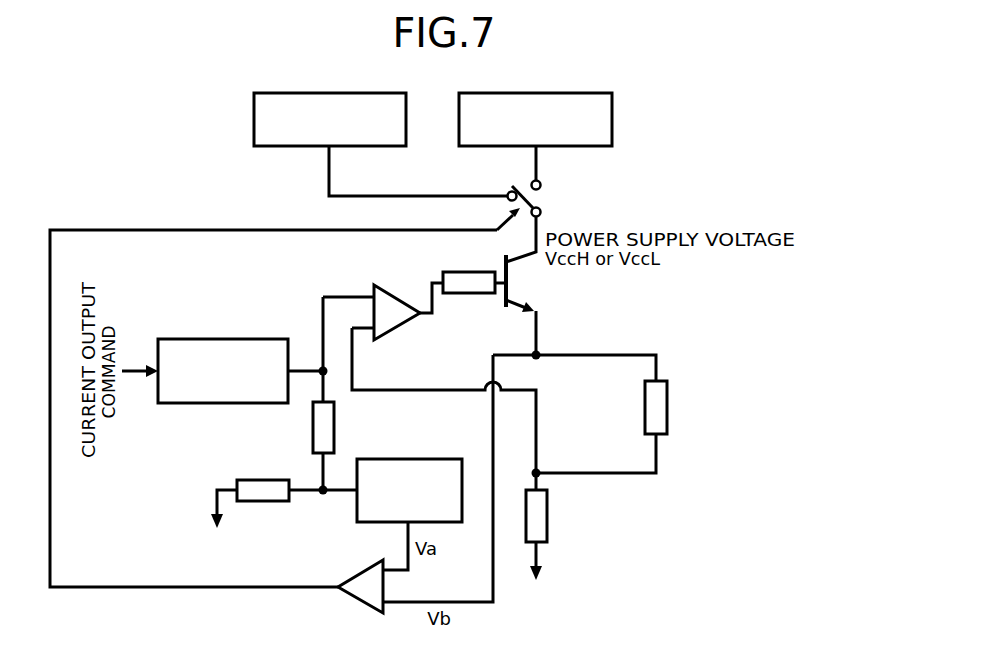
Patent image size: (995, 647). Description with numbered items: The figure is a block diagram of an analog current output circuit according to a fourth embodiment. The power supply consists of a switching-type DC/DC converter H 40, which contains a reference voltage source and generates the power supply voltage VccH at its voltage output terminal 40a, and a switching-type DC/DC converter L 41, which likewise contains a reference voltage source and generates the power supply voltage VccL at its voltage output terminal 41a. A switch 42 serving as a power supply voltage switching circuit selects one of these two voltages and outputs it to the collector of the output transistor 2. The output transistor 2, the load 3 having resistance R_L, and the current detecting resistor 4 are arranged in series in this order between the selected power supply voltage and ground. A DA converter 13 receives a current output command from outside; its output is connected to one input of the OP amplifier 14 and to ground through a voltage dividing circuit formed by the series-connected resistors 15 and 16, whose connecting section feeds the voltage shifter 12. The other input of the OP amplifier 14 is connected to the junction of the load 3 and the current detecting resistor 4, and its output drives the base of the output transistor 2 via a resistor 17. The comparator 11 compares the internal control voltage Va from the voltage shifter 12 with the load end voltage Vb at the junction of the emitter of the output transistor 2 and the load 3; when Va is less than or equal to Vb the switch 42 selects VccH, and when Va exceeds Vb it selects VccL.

The output transistor 2 is at (504, 298).
The load 3 is at (667, 409).
The current detecting resistor 4 is at (547, 517).
The comparator 11 is at (360, 600).
The voltage shifter 12 is at (430, 459).
The DA converter 13 is at (262, 339).
The OP amplifier 14 is at (388, 290).
The resistor 15 is at (334, 426).
The resistor 16 is at (275, 480).
The resistor 17 is at (469, 272).
The DC/DC converter H 40 is at (406, 125).
The voltage output terminal 40a is at (326, 148).
The DC/DC converter L 41 is at (612, 125).
The voltage output terminal 41a is at (539, 148).
The switch 42 is at (553, 199).